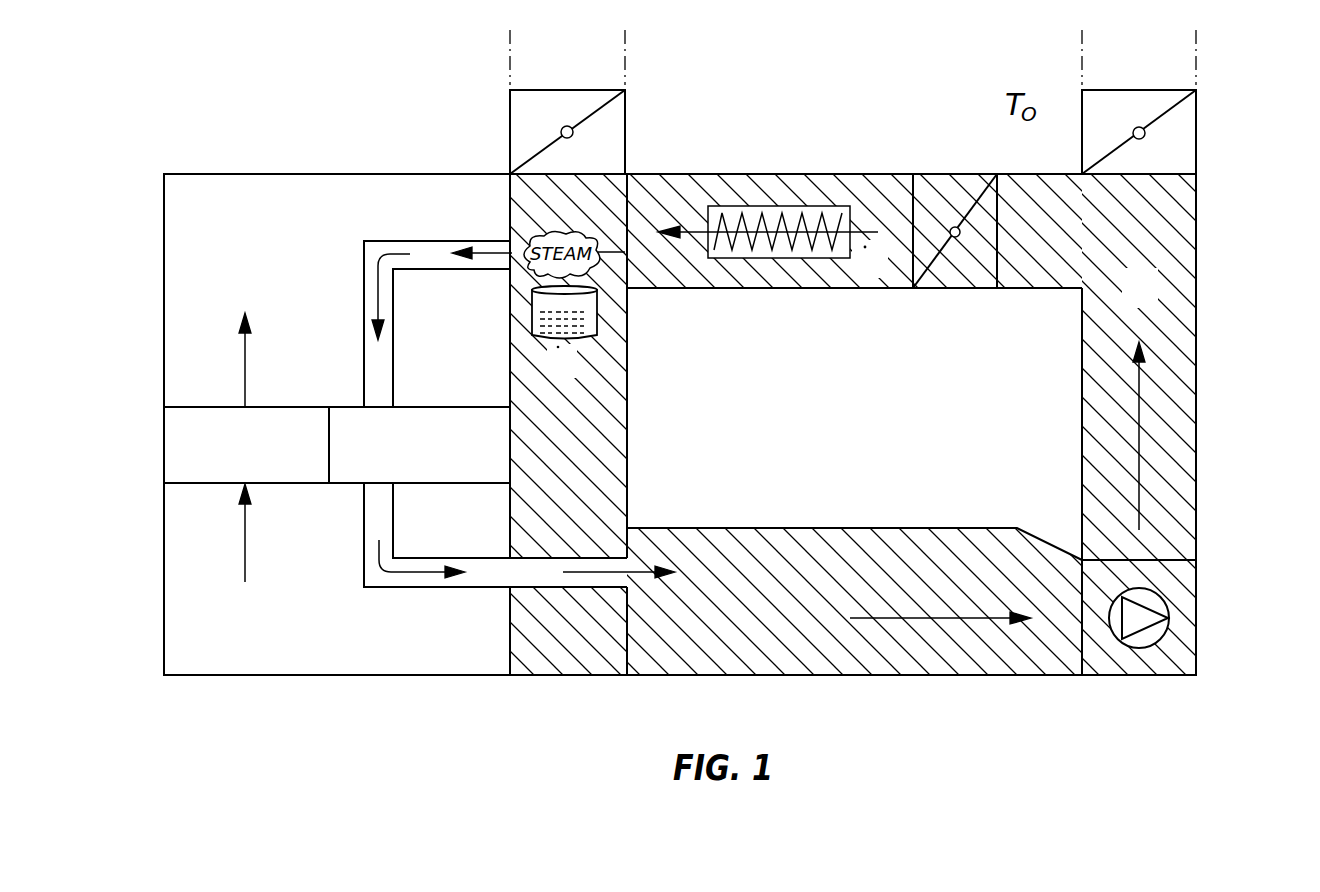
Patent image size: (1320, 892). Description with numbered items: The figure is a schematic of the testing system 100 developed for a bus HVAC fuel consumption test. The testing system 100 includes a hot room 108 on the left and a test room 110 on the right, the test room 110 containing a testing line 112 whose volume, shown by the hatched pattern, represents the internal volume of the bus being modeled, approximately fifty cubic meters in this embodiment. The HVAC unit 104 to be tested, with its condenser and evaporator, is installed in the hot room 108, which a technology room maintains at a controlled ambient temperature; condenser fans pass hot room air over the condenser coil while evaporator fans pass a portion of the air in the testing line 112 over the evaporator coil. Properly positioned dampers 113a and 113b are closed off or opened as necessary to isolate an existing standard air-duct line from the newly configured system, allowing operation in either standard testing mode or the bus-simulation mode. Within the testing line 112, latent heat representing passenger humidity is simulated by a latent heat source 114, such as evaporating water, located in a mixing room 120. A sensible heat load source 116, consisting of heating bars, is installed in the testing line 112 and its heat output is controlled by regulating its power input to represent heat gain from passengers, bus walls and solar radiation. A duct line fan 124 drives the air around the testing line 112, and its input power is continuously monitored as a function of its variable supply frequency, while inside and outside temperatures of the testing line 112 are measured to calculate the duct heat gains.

The testing system 100 is at (776, 136).
The HVAC unit 104 is at (294, 486).
The hot room 108 is at (317, 311).
The test room 110 is at (865, 422).
The testing line 112 is at (1197, 318).
The dampers 113a is at (626, 136).
The damper 113b is at (961, 172).
The latent heat source 114 is at (585, 338).
The sensible heat load source 116 is at (763, 258).
The mixing room 120 is at (585, 448).
The duct line fan 124 is at (1168, 630).